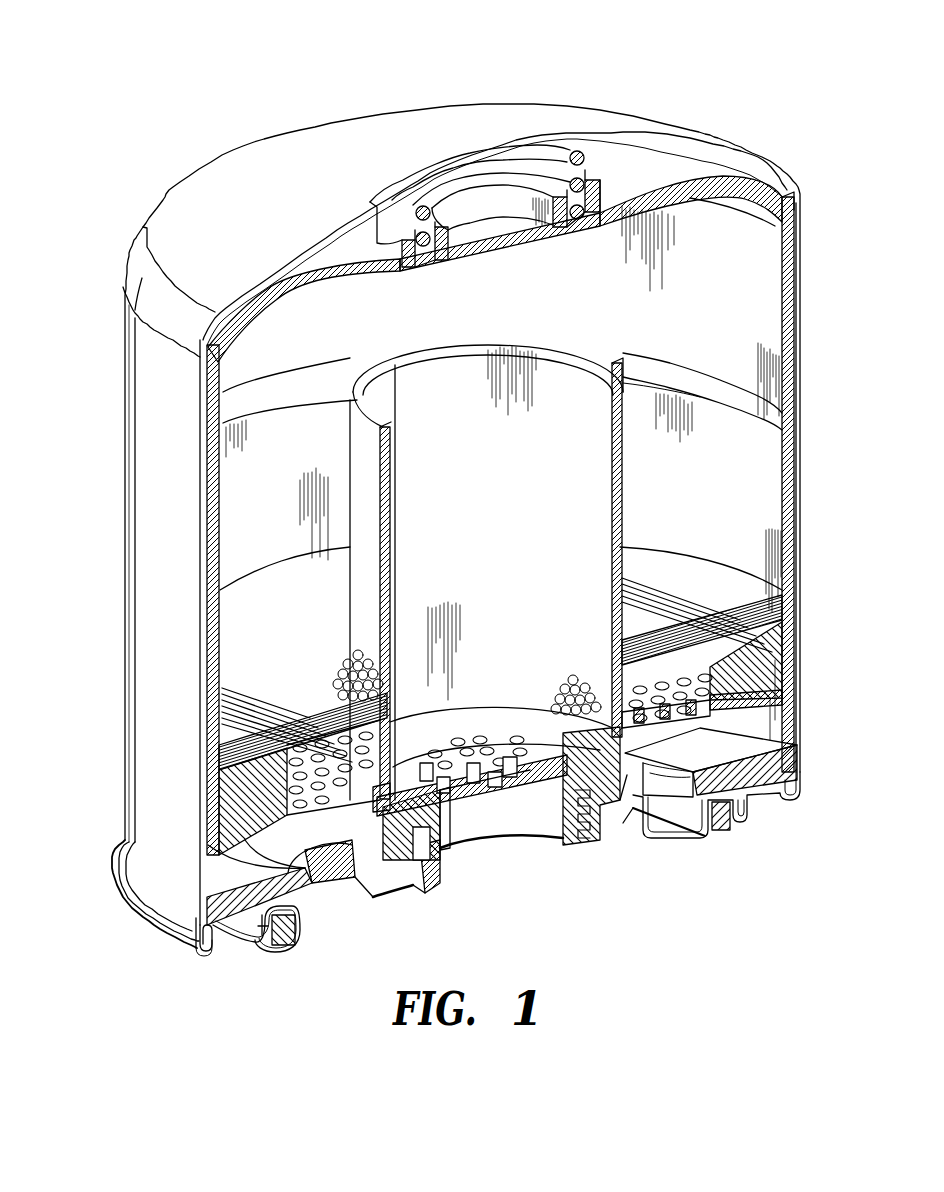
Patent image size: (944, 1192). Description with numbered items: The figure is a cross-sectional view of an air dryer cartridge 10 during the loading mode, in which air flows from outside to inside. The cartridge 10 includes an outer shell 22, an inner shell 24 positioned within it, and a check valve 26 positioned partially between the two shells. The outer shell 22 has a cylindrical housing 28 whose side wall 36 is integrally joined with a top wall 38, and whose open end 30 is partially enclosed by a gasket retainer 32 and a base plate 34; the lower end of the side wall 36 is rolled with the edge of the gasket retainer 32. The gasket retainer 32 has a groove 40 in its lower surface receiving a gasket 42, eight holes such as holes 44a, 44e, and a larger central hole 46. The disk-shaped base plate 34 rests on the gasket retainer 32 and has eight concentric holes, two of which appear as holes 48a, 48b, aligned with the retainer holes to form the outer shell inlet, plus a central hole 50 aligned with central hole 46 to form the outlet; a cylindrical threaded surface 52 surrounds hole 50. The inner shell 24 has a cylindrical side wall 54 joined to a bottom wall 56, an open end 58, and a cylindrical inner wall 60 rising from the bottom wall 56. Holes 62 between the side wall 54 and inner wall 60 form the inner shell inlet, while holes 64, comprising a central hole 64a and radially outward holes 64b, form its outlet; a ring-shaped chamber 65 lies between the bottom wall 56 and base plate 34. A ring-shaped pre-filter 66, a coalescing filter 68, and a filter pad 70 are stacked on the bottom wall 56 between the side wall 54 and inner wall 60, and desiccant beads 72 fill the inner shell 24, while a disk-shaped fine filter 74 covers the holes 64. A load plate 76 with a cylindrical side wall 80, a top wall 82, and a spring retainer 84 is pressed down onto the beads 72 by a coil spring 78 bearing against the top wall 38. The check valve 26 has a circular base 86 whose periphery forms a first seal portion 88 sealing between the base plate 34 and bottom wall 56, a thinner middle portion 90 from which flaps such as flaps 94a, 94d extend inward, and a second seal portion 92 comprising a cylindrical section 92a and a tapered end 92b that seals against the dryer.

The cartridge 10 is at (245, 117).
The outer shell 22 is at (160, 462).
The inner shell 24 is at (208, 626).
The check valve 26 is at (473, 833).
The cylindrical housing 28 is at (160, 398).
The open end 30 is at (214, 952).
The gasket retainer 32 is at (198, 958).
The base plate 34 is at (375, 905).
The side wall 36 is at (122, 525).
The top wall 38 is at (415, 128).
The groove 40 is at (302, 935).
The gasket 42 is at (285, 946).
The hole 44a is at (310, 893).
The hole 44e is at (686, 800).
The central hole 46 is at (632, 820).
The hole 48a is at (300, 858).
The hole 48b is at (690, 772).
The central hole 50 is at (410, 905).
The cylindrical threaded surface 52 is at (588, 842).
The cylindrical side wall 54 is at (790, 480).
The bottom wall 56 is at (787, 720).
The open end 58 is at (790, 196).
The cylindrical inner wall 60 is at (356, 596).
The holes 62 is at (300, 735).
The holes 64 is at (480, 738).
The central hole 64a is at (500, 752).
The holes 64b is at (460, 730).
The ring-shaped chamber 65 is at (216, 876).
The pre-filter 66 is at (770, 652).
The coalescing filter 68 is at (218, 764).
The filter pad 70 is at (232, 736).
The desiccant beads 72 is at (341, 681).
The fine filter 74 is at (418, 727).
The load plate 76 is at (650, 160).
The spring 78 is at (565, 153).
The cylindrical side wall 80 is at (755, 254).
The top wall 82 is at (708, 170).
The spring retainer 84 is at (392, 249).
The base 86 is at (597, 730).
The first seal portion 88 is at (392, 892).
The middle portion 90 is at (407, 790).
The second seal portion 92 is at (508, 831).
The cylindrical section 92a is at (455, 853).
The tapered end 92b is at (428, 885).
The flap 94a is at (450, 805).
The flap 94d is at (530, 790).